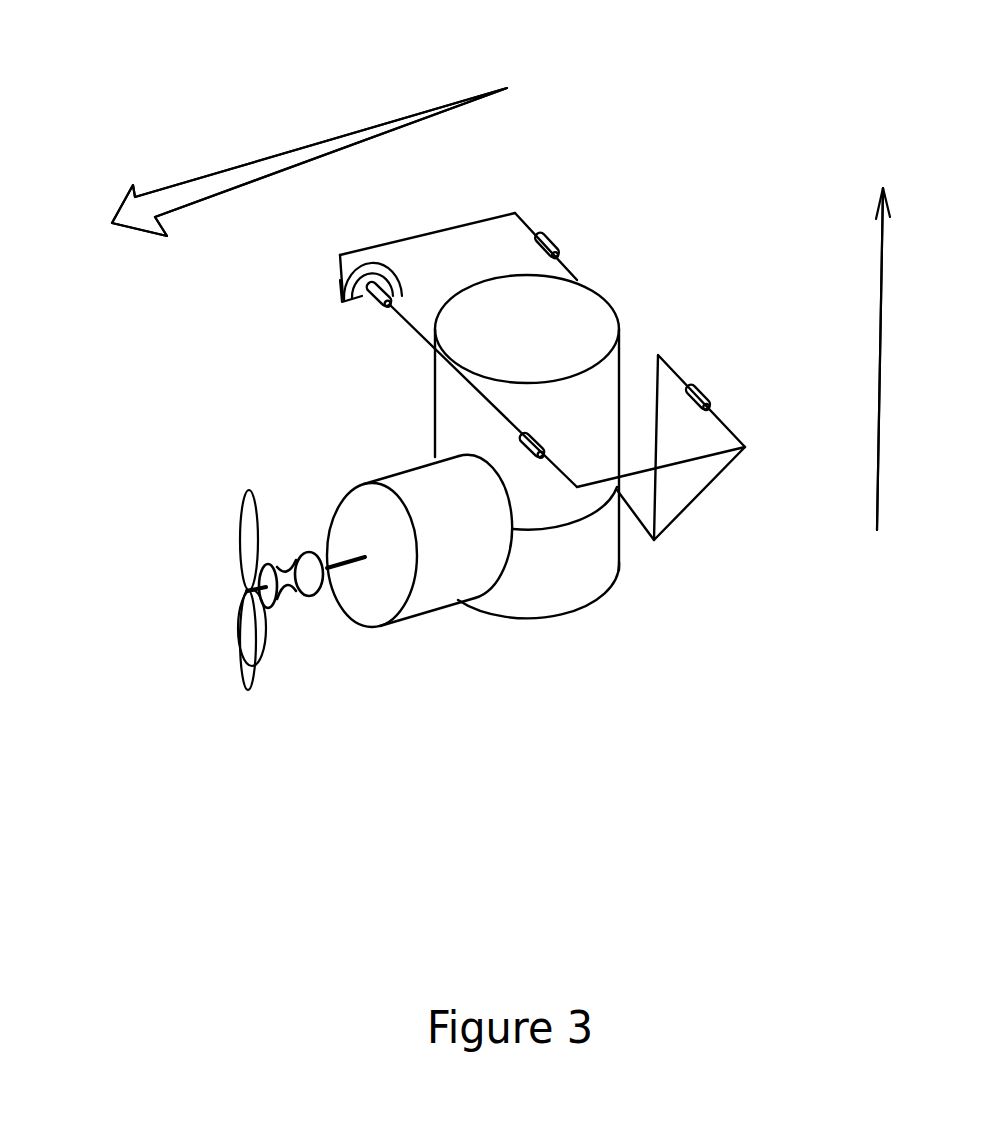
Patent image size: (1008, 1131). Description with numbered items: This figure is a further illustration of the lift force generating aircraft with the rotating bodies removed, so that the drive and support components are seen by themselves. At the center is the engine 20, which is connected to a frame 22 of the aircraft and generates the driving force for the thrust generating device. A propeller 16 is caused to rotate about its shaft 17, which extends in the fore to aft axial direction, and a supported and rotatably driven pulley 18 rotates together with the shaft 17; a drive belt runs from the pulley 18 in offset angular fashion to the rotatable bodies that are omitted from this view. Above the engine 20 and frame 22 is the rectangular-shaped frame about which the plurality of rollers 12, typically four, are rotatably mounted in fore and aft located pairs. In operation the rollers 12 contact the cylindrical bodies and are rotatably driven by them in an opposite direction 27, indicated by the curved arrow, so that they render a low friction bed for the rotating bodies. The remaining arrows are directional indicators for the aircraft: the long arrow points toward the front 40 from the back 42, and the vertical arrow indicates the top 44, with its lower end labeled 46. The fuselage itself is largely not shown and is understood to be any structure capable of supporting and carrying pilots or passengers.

The rollers 12 is at (367, 302).
The propeller 16 is at (238, 533).
The shaft 17 is at (238, 668).
The pulley 18 is at (303, 600).
The engine 20 is at (483, 618).
The frame 22 is at (647, 537).
The opposite direction 27 is at (337, 285).
The front 40 is at (272, 175).
The back 42 is at (338, 142).
The top 44 is at (876, 331).
The vertical axis 46 is at (876, 389).